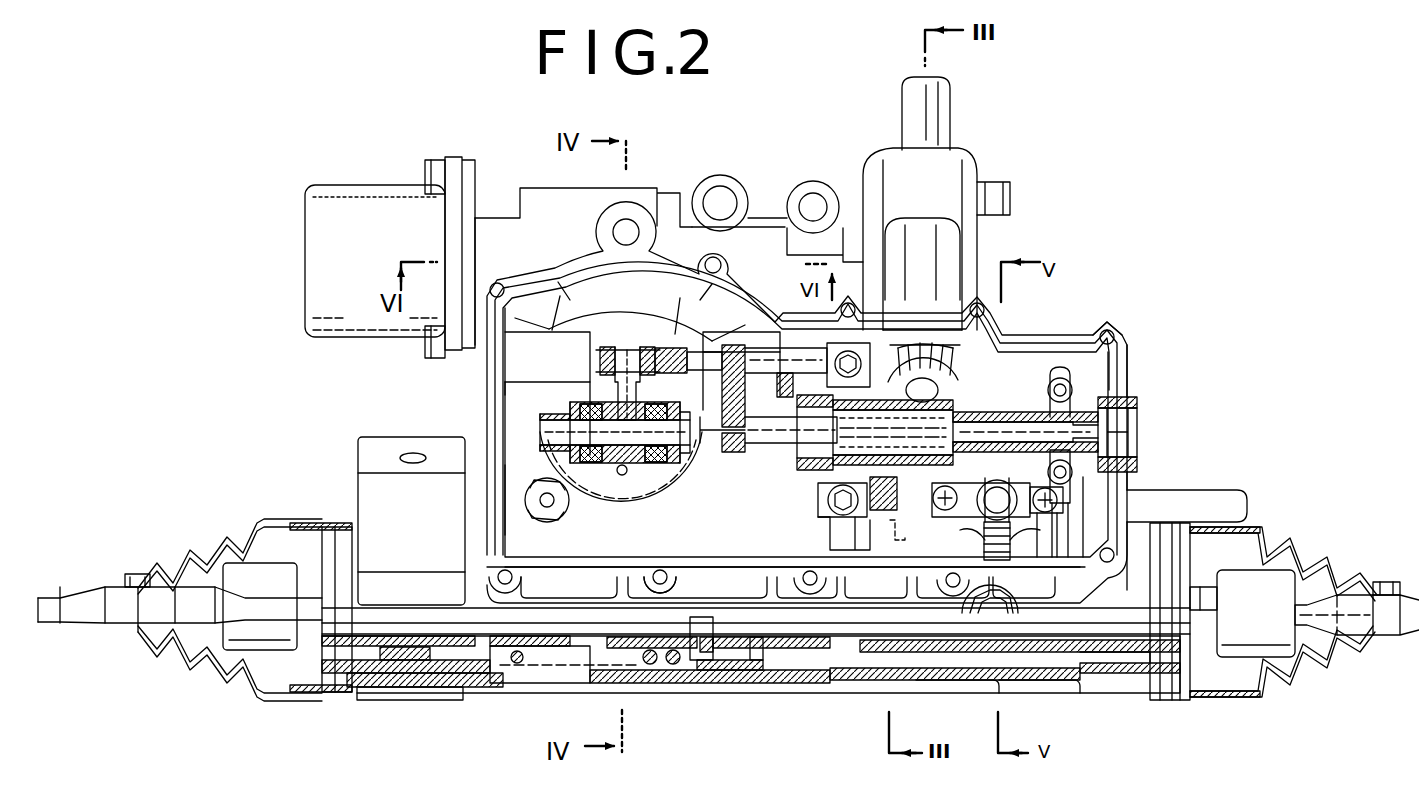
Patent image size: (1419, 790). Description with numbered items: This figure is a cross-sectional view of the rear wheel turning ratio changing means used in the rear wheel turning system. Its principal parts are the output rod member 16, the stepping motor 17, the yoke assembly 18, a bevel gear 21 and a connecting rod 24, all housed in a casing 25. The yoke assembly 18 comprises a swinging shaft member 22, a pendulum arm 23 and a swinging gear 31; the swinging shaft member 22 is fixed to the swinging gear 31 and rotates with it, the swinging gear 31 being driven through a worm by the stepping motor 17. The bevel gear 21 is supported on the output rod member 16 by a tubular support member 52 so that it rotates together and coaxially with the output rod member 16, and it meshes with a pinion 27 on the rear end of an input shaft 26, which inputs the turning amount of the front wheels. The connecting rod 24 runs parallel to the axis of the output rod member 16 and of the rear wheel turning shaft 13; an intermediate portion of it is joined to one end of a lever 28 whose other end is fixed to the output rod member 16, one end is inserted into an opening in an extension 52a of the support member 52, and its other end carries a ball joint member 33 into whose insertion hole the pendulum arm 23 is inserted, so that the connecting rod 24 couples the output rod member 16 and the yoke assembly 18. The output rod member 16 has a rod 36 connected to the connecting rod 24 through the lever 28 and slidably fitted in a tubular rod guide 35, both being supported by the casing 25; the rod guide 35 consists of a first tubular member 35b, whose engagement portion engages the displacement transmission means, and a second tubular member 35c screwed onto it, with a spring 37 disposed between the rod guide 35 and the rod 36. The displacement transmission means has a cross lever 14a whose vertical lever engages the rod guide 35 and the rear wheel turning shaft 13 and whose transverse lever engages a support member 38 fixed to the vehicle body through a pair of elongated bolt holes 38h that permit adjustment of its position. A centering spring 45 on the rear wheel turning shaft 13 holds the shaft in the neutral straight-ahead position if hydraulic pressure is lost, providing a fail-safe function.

The rear wheel turning shaft 13 is at (880, 650).
The cross lever 14a is at (1005, 560).
The output rod member 16 is at (765, 460).
The stepping motor 17 is at (345, 318).
The yoke assembly 18 is at (578, 362).
The bevel gear 21 is at (884, 525).
The swinging shaft member 22 is at (610, 455).
The pendulum arm 23 is at (615, 378).
The connecting rod 24 is at (765, 345).
The casing 25 is at (487, 380).
The input shaft 26 is at (947, 130).
The pinion 27 is at (990, 333).
The lever 28 is at (621, 468).
The swinging gear 31 is at (590, 285).
The ball joint member 33 is at (624, 345).
The rod guide 35 is at (1090, 403).
The first tubular member 35b is at (1013, 417).
The second tubular member 35c is at (790, 500).
The rod 36 is at (1073, 430).
The spring 37 is at (950, 387).
The support member 38 is at (1063, 507).
The bolt holes 38h is at (978, 560).
The centering spring 45 is at (660, 665).
The tubular support member 52 is at (830, 470).
The extension 52a is at (790, 455).